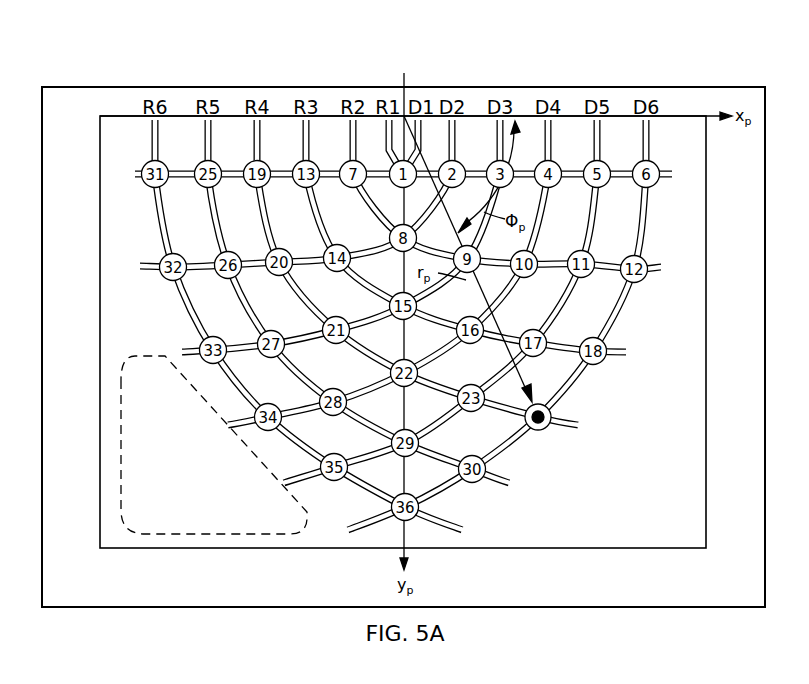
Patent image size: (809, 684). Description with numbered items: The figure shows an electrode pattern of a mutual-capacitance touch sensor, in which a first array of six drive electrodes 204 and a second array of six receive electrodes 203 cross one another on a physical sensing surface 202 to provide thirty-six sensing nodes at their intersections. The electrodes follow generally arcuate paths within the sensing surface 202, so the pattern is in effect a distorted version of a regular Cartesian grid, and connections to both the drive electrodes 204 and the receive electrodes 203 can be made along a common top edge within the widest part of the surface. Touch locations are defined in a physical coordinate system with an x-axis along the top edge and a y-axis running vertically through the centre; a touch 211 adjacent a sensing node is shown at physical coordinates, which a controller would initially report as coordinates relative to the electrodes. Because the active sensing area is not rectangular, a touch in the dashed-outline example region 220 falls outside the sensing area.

The physical sensing surface 202 is at (619, 108).
The receive electrodes 203 is at (207, 225).
The drive electrodes 204 is at (182, 352).
The touch 211 is at (549, 430).
The example region 220 is at (120, 465).